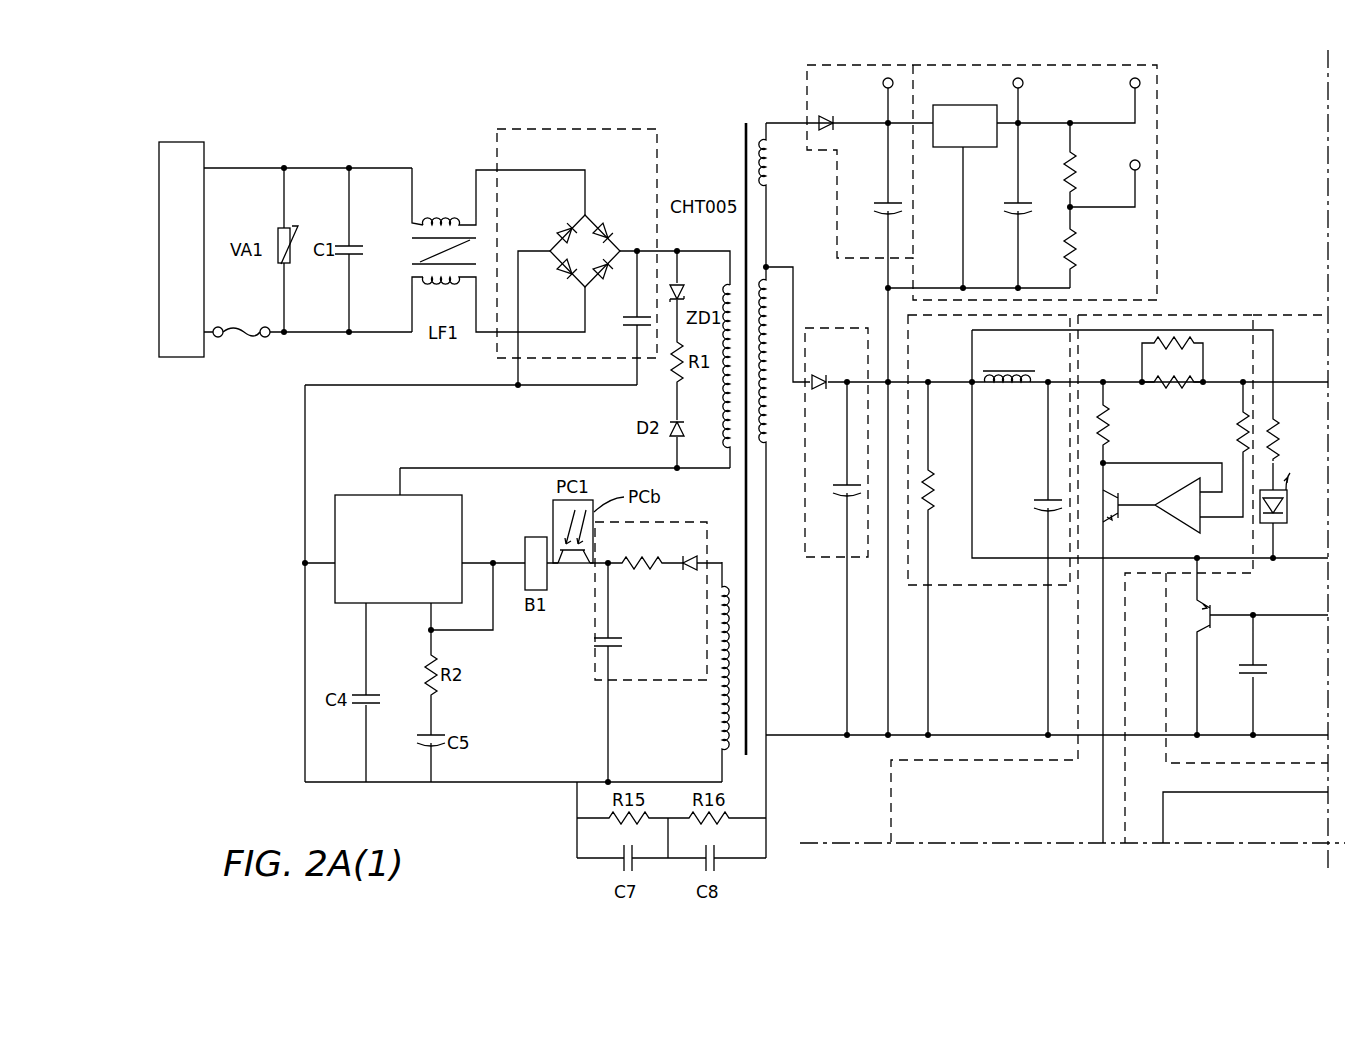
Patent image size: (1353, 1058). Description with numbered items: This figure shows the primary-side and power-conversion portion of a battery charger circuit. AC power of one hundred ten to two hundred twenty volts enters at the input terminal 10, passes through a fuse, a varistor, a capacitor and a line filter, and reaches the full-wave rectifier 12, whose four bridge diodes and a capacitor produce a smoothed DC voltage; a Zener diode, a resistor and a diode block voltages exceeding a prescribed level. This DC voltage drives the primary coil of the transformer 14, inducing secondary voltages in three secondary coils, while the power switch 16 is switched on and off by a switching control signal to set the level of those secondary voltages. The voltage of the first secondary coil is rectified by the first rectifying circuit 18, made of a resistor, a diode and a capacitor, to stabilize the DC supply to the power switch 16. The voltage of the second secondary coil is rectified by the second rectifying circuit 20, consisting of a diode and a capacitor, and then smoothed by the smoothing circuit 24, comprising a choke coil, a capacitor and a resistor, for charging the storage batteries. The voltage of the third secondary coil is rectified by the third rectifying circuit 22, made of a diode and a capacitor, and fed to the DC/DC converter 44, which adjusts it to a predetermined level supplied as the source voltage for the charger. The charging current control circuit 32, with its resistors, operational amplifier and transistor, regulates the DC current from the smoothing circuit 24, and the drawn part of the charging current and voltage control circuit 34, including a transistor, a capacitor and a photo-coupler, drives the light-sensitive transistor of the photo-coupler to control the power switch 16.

The input terminal 10 is at (180, 358).
The full-wave rectifier 12 is at (585, 128).
The transformer 14 is at (746, 123).
The power switch 16 is at (348, 493).
The first rectifying circuit 18 is at (592, 623).
The second rectifying circuit 20 is at (846, 327).
The third rectifying circuit 22 is at (983, 392).
The smoothing circuit 24 is at (980, 586).
The charging current control circuit 32 is at (1200, 313).
The charging current and voltage control circuit 34 is at (1273, 313).
The DC/DC converter 44 is at (1160, 118).